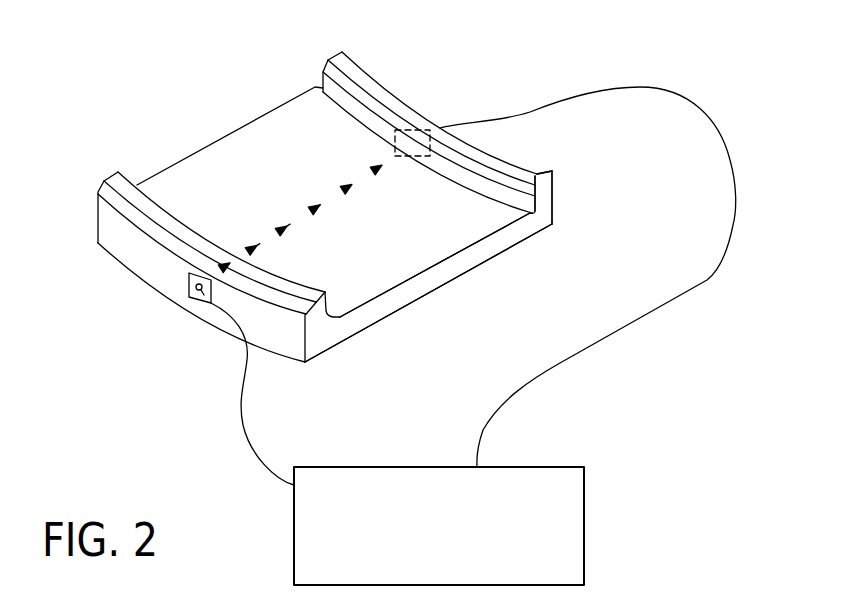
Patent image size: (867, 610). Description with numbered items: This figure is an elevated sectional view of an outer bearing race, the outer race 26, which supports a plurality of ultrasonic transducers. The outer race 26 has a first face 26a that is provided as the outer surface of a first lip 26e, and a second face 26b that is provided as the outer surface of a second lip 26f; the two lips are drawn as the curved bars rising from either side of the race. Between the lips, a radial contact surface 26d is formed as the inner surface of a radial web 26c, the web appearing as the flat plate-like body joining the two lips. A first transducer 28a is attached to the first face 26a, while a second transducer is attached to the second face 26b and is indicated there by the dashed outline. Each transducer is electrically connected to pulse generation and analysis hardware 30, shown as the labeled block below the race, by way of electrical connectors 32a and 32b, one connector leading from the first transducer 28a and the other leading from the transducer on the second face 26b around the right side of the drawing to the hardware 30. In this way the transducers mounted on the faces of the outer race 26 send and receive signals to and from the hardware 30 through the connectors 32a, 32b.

The outer race 26 is at (518, 89).
The first face 26a is at (177, 236).
The second face 26b is at (480, 135).
The radial web 26c is at (406, 305).
The radial contact surface 26d is at (194, 165).
The first lip 26e is at (117, 171).
The second lip 26f is at (548, 172).
The first transducer 28a is at (190, 293).
The pulse generation and analysis hardware 30 is at (584, 532).
The electrical connector 32a is at (248, 430).
The electrical connector 32b is at (737, 198).